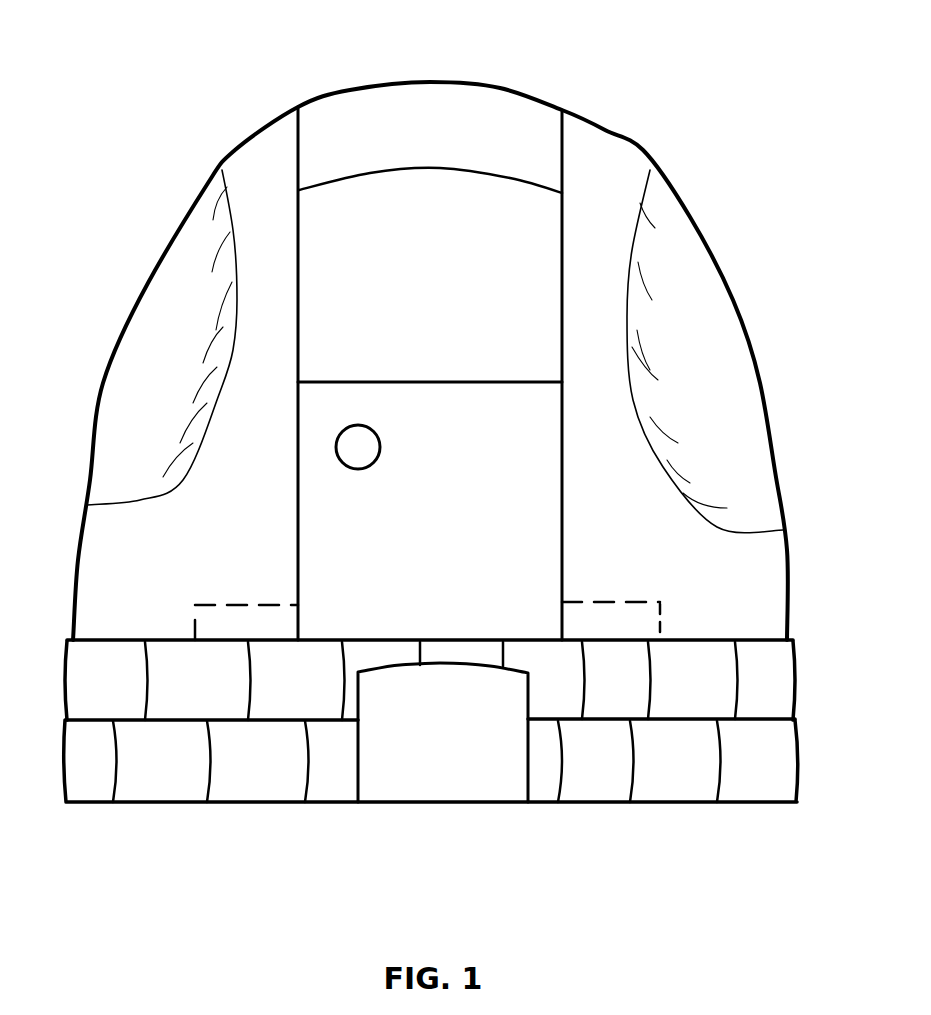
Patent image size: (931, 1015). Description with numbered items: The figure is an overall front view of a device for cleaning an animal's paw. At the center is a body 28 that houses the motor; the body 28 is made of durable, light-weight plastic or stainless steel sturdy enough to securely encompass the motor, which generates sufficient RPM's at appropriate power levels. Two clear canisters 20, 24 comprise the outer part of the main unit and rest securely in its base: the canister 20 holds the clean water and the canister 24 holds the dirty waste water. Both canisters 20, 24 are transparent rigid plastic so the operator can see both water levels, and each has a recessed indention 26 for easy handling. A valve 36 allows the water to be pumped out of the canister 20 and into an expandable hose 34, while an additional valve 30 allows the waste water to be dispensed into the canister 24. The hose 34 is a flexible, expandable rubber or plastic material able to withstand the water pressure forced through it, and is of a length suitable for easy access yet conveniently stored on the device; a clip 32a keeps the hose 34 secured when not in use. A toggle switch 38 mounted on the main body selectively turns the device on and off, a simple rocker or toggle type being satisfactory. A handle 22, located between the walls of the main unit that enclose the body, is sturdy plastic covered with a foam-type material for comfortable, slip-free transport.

The canister 20 is at (257, 188).
The handle 22 is at (437, 125).
The canister 24 is at (582, 195).
The recessed indention 26 is at (188, 332).
The body 28 is at (567, 547).
The valve 30 is at (622, 618).
The clip 32a is at (447, 748).
The expandable hose 34 is at (663, 773).
The valve 36 is at (232, 622).
The toggle switch 38 is at (357, 457).